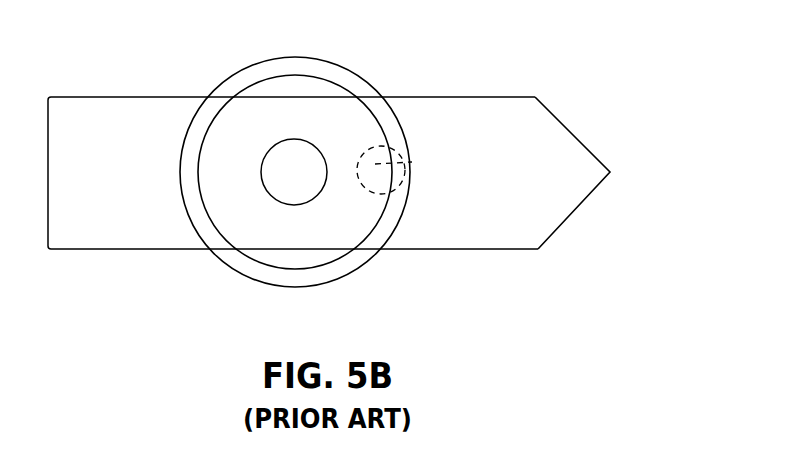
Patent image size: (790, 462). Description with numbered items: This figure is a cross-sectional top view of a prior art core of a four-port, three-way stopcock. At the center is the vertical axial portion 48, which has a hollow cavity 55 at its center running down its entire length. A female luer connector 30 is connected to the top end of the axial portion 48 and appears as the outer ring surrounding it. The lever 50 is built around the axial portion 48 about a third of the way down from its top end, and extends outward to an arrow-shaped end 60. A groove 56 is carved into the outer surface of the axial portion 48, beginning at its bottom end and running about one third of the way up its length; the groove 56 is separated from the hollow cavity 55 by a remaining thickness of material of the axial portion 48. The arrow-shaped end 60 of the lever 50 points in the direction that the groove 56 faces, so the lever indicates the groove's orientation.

The female luer connector 30 is at (335, 283).
The axial portion 48 is at (285, 100).
The lever 50 is at (103, 97).
The hollow cavity 55 is at (280, 193).
The groove 56 is at (412, 162).
The arrow-shaped end 60 is at (608, 171).